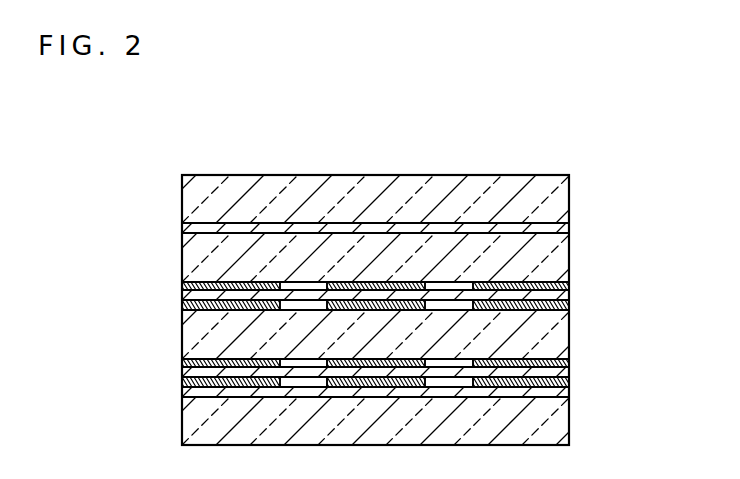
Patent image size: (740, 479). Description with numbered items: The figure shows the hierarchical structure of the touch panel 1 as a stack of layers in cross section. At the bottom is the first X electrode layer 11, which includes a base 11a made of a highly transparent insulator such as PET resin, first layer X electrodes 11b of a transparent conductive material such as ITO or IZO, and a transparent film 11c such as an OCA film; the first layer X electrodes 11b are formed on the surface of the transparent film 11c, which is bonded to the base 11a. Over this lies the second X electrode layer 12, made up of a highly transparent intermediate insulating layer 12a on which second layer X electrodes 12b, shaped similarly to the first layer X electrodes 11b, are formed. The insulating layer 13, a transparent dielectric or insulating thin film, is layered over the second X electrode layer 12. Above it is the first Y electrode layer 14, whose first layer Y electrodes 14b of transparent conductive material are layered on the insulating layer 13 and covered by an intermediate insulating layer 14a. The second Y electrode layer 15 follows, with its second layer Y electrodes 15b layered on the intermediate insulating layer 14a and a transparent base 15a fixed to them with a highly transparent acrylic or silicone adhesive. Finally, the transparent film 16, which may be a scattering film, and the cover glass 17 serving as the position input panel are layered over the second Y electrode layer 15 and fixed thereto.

The touch panel 1 is at (695, 129).
The first X electrode layer 11 is at (297, 410).
The base 11a is at (329, 432).
The first layer X electrodes 11b is at (183, 383).
The transparent film 11c is at (183, 391).
The second X electrode layer 12 is at (456, 403).
The intermediate insulating layer 12a is at (670, 355).
The second layer X electrodes 12b is at (570, 363).
The insulating layer 13 is at (183, 333).
The first Y electrode layer 14 is at (456, 292).
The intermediate insulating layer 14a is at (570, 292).
The first layer Y electrodes 14b is at (426, 316).
The second Y electrode layer 15 is at (297, 246).
The base 15a is at (183, 252).
The second layer Y electrodes 15b is at (183, 286).
The transparent film 16 is at (570, 230).
The cover glass 17 is at (570, 189).